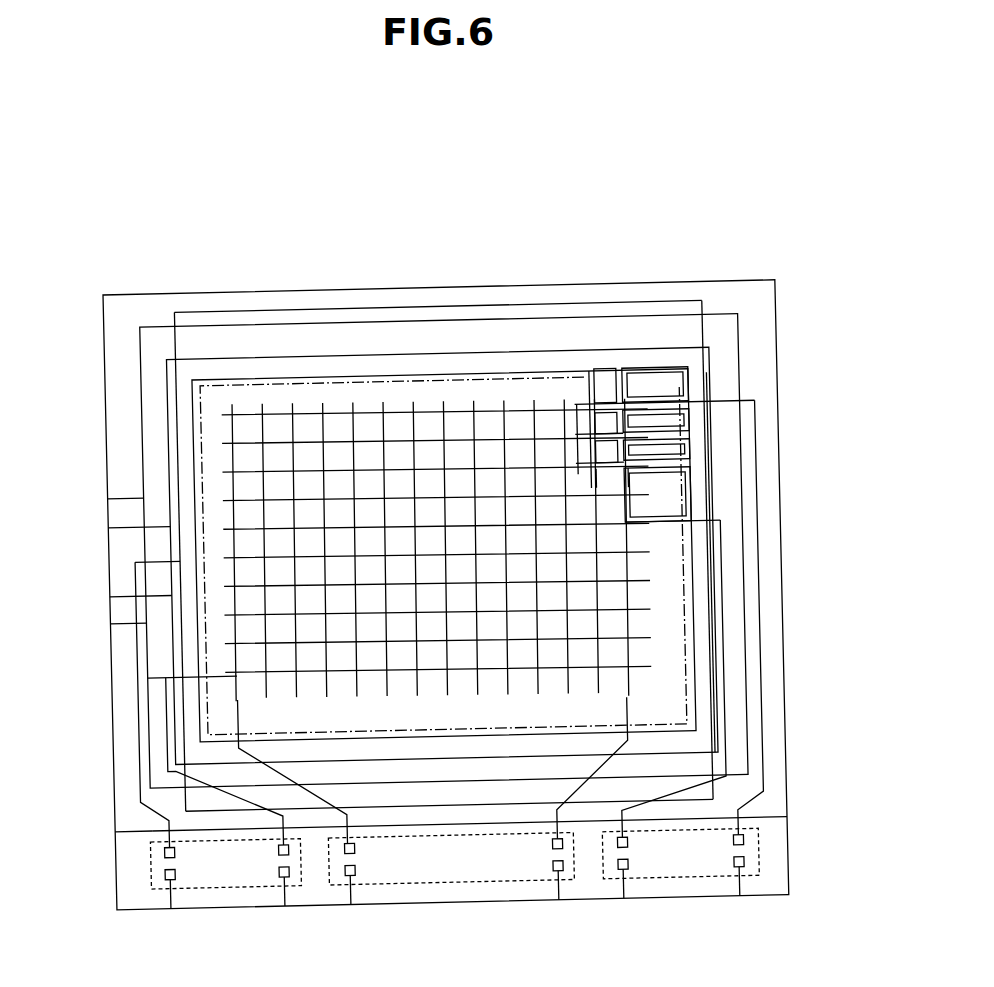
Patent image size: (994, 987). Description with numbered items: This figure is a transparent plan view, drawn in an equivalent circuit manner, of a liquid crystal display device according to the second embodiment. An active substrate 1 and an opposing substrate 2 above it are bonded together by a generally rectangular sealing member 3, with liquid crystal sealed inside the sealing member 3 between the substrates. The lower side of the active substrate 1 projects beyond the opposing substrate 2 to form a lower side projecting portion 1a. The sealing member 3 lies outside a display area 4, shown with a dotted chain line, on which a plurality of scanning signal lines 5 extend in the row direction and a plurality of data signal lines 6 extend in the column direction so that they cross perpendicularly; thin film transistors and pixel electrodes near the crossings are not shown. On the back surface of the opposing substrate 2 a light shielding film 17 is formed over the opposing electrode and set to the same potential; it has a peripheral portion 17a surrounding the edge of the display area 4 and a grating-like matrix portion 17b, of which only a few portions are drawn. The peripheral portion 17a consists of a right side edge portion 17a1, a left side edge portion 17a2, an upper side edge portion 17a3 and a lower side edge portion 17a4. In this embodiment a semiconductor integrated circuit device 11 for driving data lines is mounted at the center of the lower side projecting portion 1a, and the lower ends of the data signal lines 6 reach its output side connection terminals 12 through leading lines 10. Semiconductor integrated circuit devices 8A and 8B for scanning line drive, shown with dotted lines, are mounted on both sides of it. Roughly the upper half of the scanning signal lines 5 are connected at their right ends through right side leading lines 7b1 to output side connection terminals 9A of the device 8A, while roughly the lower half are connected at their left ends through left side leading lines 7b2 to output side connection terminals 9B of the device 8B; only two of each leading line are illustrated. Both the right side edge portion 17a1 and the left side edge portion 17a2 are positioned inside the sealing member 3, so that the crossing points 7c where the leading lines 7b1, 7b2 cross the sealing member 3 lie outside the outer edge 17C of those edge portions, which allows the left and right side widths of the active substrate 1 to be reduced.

The active substrate 1 is at (790, 848).
The lower side projecting portion 1a is at (135, 875).
The opposing substrate 2 is at (777, 722).
The sealing member 3 is at (320, 338).
The display area 4 is at (515, 388).
The scanning signal lines 5 is at (393, 405).
The data signal lines 6 is at (228, 433).
The right side leading lines 7b1 is at (720, 630).
The left side leading lines 7b2 is at (167, 753).
The crossing points 7c is at (127, 562).
The semiconductor integrated circuit device for scanning line drive 8A is at (690, 857).
The semiconductor integrated circuit device for scanning line drive 8B is at (240, 868).
The output side connection terminals 9A is at (627, 842).
The output side connection terminals 9B is at (175, 852).
The leading lines 10 is at (318, 800).
The semiconductor integrated circuit device for driving data lines 11 is at (423, 868).
The output side connection terminals 12 is at (355, 852).
The light shielding film 17 is at (445, 577).
The peripheral portion 17a is at (697, 377).
The right side edge portion 17a1 is at (697, 432).
The left side edge portion 17a2 is at (183, 474).
The upper side edge portion 17a3 is at (232, 316).
The lower side edge portion 17a4 is at (505, 804).
The matrix portion 17b is at (623, 370).
The outer edge 17C is at (707, 385).